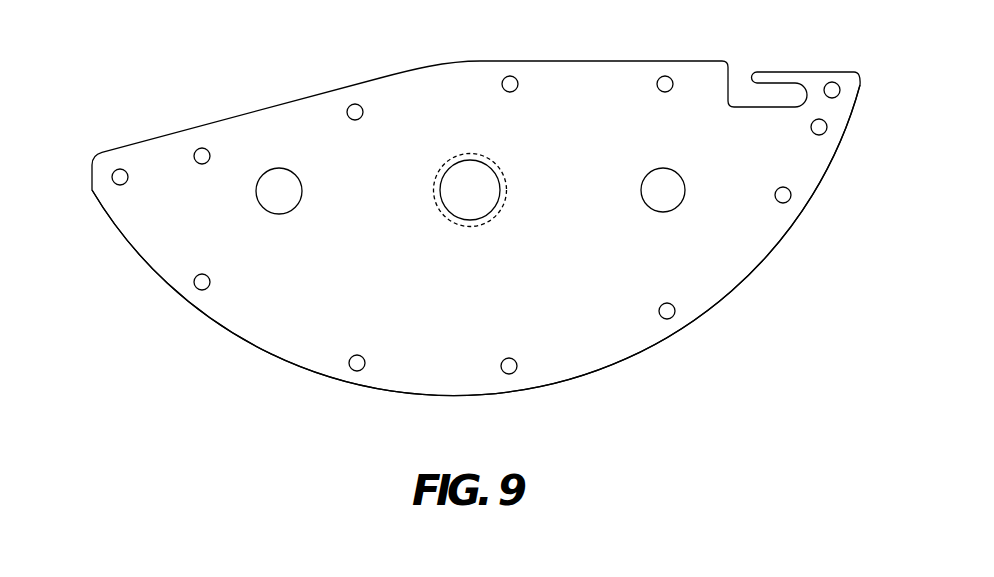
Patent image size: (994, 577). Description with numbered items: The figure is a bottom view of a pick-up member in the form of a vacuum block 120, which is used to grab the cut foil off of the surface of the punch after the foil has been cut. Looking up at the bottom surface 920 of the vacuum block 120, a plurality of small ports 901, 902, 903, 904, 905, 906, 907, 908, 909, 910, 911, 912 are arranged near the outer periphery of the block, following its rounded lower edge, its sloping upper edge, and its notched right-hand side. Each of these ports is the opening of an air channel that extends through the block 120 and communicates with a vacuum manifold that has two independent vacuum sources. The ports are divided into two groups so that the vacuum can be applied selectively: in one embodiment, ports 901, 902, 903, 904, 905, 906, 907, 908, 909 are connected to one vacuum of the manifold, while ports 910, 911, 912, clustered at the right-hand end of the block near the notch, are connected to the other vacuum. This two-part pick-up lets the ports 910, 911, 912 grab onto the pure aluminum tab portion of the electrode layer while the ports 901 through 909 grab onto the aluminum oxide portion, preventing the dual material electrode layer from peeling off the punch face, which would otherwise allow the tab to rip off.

The vacuum block 120 is at (590, 352).
The bottom surface 920 is at (278, 336).
The port 901 is at (672, 319).
The port 902 is at (515, 374).
The port 903 is at (354, 371).
The port 904 is at (198, 290).
The port 905 is at (113, 181).
The port 906 is at (200, 149).
The port 907 is at (353, 104).
The port 908 is at (507, 76).
The port 909 is at (662, 76).
The port 910 is at (836, 83).
The port 911 is at (826, 131).
The port 912 is at (790, 199).